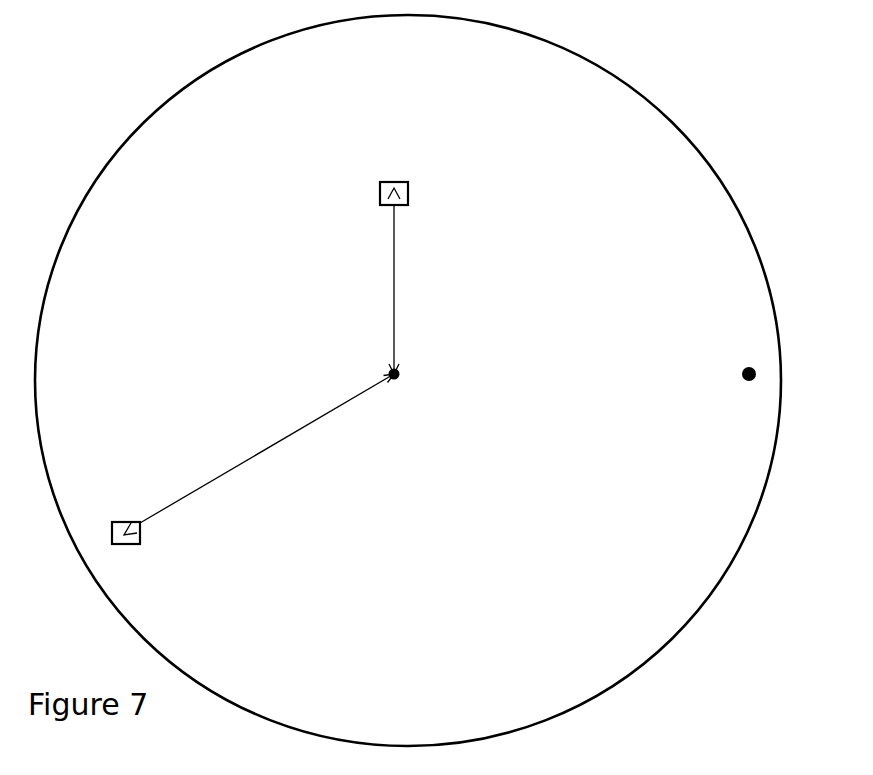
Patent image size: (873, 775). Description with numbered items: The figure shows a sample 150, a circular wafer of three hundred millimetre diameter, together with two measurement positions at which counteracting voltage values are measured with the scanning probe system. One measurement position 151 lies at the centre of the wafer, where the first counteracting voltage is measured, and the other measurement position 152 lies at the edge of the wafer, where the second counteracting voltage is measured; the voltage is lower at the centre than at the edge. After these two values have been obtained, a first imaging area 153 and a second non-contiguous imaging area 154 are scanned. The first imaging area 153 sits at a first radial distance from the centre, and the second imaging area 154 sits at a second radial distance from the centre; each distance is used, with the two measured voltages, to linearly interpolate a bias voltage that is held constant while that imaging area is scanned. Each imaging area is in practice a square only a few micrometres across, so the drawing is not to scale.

The sample 150 is at (672, 638).
The measurement position 151 is at (396, 378).
The measurement position 152 is at (745, 380).
The first imaging area 153 is at (380, 193).
The second imaging area 154 is at (140, 541).